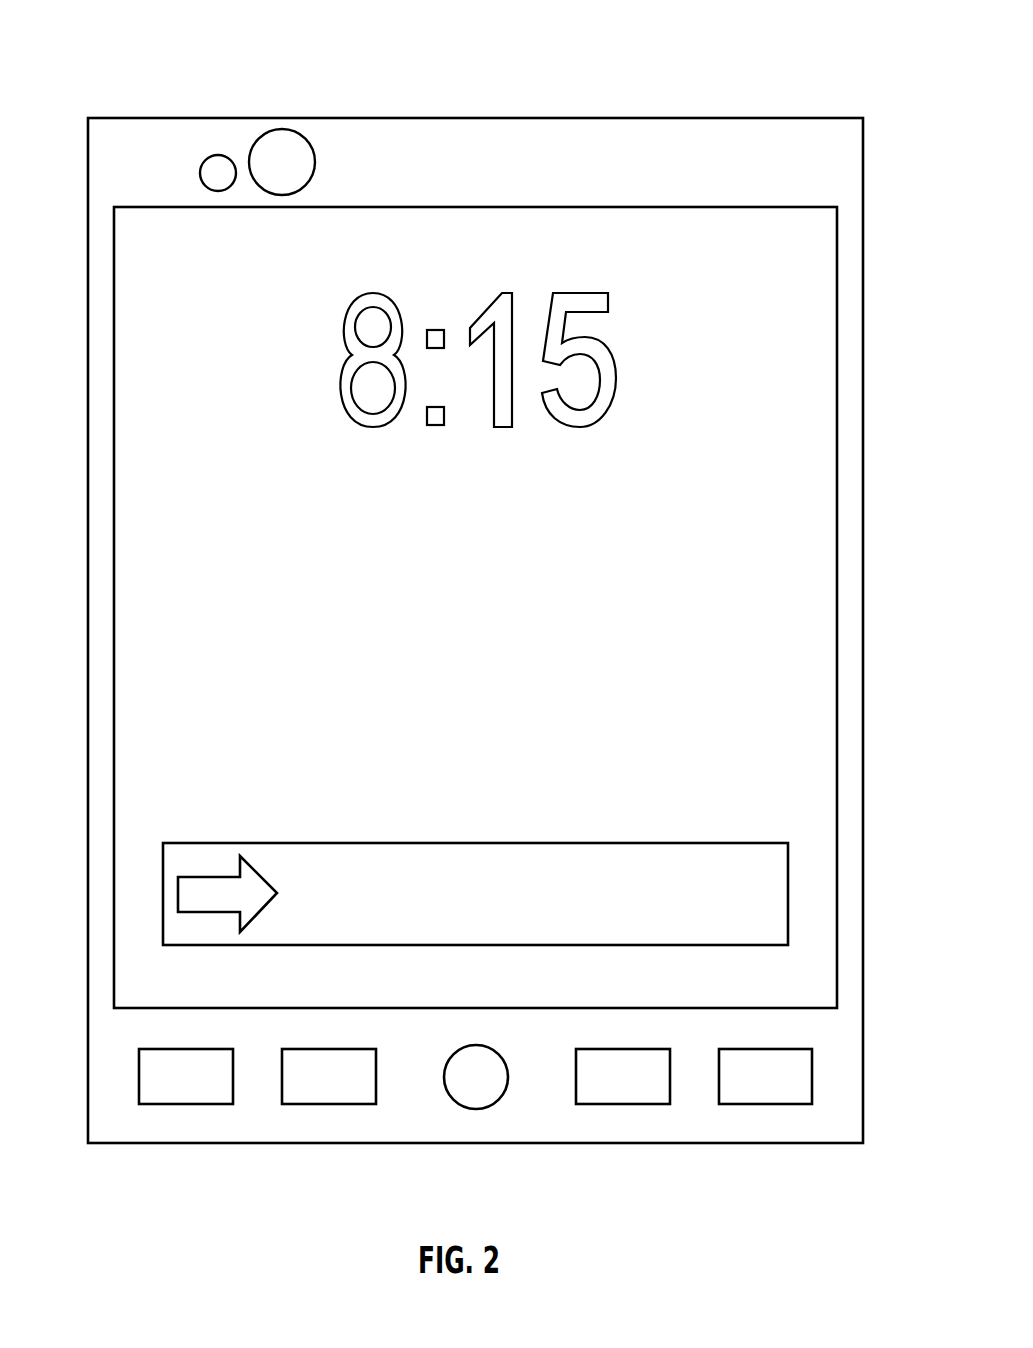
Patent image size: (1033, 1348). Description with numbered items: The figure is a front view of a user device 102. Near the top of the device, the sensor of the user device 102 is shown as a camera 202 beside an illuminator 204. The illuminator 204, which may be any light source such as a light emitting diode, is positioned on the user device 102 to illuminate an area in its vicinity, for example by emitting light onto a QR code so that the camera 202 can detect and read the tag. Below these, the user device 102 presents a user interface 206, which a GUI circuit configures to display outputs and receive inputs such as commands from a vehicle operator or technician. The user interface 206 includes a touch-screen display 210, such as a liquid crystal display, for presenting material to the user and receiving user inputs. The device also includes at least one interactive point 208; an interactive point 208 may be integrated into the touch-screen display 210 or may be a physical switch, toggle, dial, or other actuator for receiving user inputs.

The user device 102 is at (118, 32).
The camera 202 is at (283, 130).
The illuminator 204 is at (217, 155).
The user interface 206 is at (837, 432).
The interactive point 208 is at (788, 893).
The touch-screen display 210 is at (800, 627).